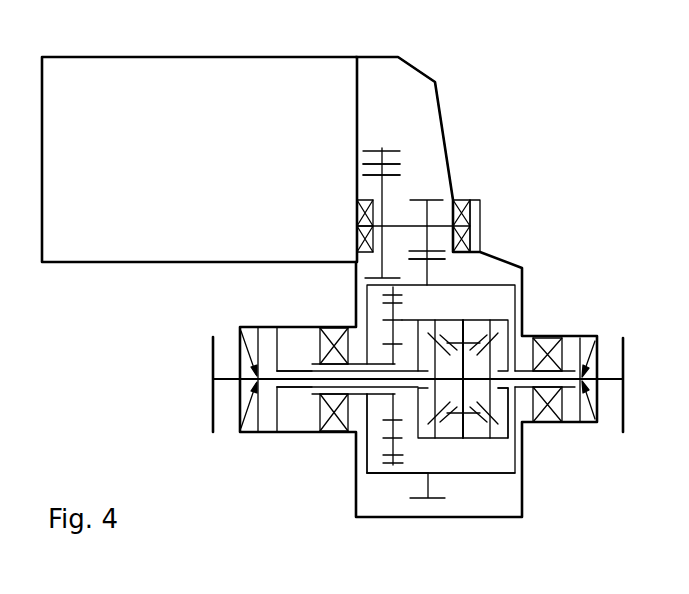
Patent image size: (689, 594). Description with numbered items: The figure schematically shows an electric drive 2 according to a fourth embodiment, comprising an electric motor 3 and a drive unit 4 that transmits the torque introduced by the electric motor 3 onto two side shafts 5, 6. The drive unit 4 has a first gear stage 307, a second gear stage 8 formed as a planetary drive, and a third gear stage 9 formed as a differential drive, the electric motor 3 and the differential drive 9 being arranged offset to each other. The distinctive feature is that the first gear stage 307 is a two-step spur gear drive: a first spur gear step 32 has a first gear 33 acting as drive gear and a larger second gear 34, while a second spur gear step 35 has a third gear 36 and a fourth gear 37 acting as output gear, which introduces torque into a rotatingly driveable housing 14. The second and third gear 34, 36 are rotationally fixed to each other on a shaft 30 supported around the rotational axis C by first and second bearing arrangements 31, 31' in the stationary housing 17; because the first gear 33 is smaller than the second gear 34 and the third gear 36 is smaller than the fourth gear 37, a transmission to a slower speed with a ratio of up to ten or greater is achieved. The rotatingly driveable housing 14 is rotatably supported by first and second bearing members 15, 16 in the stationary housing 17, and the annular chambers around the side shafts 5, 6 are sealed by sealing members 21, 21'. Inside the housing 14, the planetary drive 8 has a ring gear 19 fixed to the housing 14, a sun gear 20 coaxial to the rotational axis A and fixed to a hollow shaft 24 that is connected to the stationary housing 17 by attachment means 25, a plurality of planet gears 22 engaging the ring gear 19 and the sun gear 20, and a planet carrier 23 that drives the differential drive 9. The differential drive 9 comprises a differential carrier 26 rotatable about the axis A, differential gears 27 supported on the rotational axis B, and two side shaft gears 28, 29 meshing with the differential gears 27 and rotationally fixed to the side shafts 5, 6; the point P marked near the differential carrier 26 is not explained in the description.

The electric drive 2 is at (545, 97).
The electric motor 3 is at (186, 171).
The drive unit 4 is at (437, 70).
The side shaft 5 is at (608, 370).
The side shaft 6 is at (227, 377).
The second gear stage 8 is at (374, 470).
The third gear stage 9 is at (509, 456).
The rotatingly driveable housing 14 is at (496, 287).
The first bearing member 15 is at (558, 425).
The second bearing member 16 is at (335, 435).
The stationary housing 17 is at (527, 292).
The ring gear 19 is at (400, 465).
The sun gear 20 is at (383, 343).
The sealing member 21 is at (596, 359).
The sealing member 21' is at (253, 402).
The planet gear 22 is at (365, 480).
The planet carrier 23 is at (407, 440).
The hollow shaft 24 is at (300, 370).
The attachment means 25 is at (270, 337).
The differential carrier 26 is at (503, 474).
The differential gear 27 is at (473, 418).
The side shaft gear 28 is at (495, 336).
The side shaft gear 29 is at (430, 334).
The shaft 30 is at (440, 222).
The first bearing arrangement 31 is at (494, 226).
The second bearing arrangement 31' is at (336, 226).
The first spur gear step 32 is at (405, 163).
The first gear 33 is at (373, 147).
The second gear 34 is at (388, 177).
The second spur gear step 35 is at (451, 259).
The third gear 36 is at (438, 197).
The fourth gear 37 is at (436, 502).
The first gear stage 307 is at (402, 128).
The rotational axis A is at (297, 434).
The rotational axis B is at (465, 415).
The rotational axis C is at (393, 225).
The point P is at (503, 426).